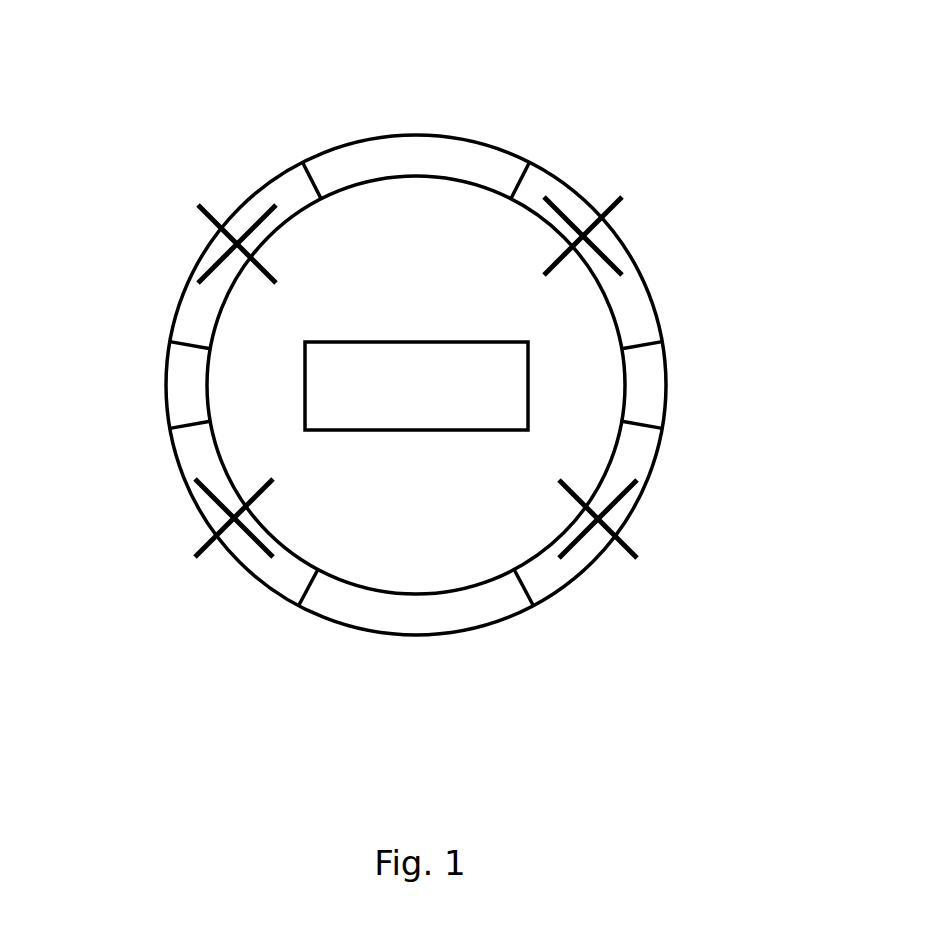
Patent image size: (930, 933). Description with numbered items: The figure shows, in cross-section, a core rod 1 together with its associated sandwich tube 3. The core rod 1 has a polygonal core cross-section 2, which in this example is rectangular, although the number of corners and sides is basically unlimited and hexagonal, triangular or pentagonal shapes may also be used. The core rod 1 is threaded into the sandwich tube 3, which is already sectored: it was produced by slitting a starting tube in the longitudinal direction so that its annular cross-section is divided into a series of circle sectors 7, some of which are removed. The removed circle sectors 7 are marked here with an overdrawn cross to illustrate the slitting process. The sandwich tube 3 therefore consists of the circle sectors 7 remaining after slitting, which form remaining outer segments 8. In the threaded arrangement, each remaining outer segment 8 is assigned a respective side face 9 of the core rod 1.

The core rod 1 is at (416, 386).
The polygonal core cross-section 2 is at (485, 448).
The sandwich tube 3 is at (604, 118).
The circle sectors 7 is at (416, 387).
The remaining outer segments 8 is at (377, 145).
The side face 9 is at (432, 342).